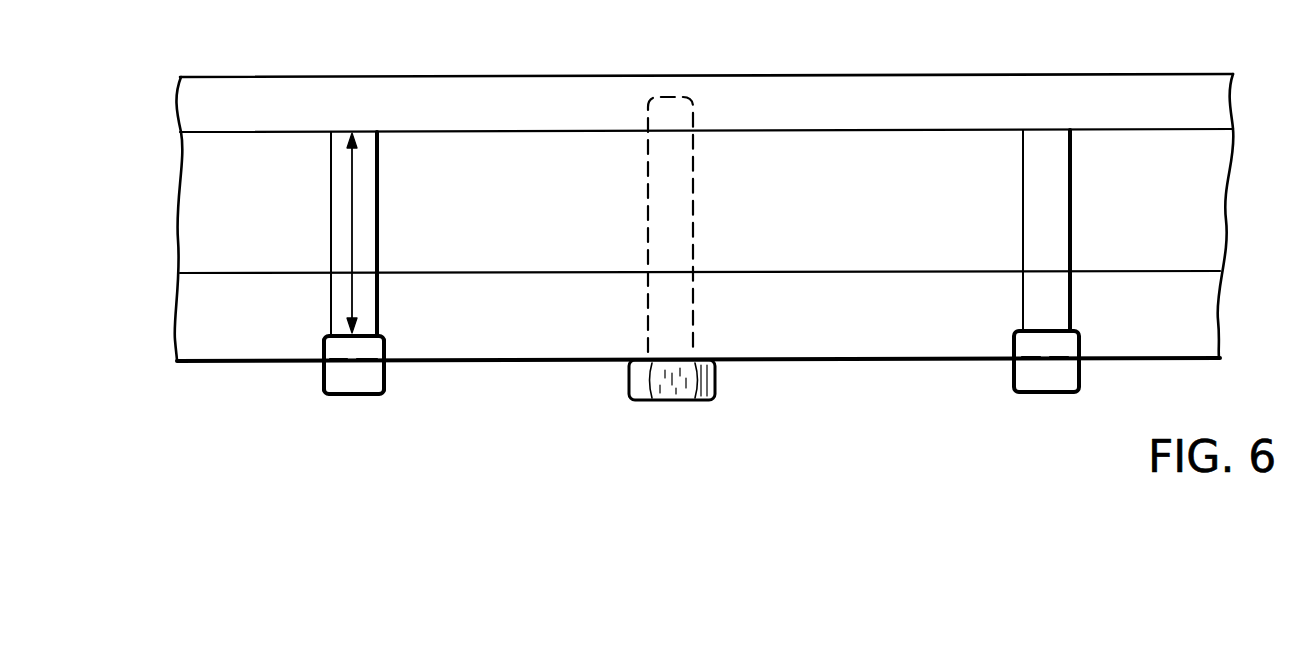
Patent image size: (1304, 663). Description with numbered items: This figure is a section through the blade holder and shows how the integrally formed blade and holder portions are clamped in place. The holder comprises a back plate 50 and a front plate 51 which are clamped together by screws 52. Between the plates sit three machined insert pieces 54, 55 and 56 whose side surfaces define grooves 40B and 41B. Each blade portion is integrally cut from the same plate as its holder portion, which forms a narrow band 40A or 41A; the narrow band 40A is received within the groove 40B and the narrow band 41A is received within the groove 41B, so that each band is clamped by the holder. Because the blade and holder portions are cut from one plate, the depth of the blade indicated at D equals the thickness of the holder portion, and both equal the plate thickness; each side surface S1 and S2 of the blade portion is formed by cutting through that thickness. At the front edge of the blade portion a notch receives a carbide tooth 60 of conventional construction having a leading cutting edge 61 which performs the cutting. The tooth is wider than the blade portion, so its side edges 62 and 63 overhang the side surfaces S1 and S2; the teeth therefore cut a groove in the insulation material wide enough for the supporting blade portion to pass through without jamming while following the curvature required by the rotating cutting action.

The back plate 50 is at (528, 96).
The front plate 51 is at (548, 340).
The screws 52 is at (701, 408).
The insert piece 54 is at (220, 165).
The insert piece 55 is at (768, 158).
The insert piece 56 is at (1176, 194).
The narrow band 40A is at (380, 188).
The groove 40B is at (376, 266).
The narrow band 41A is at (1037, 213).
The groove 41B is at (1022, 172).
The carbide tooth 60 is at (356, 385).
The leading cutting edge 61 is at (343, 404).
The side edge 62 is at (318, 380).
The side edge 63 is at (396, 380).
The depth of the blade D is at (348, 216).
The side surface S1 is at (328, 190).
The side surface S2 is at (377, 220).